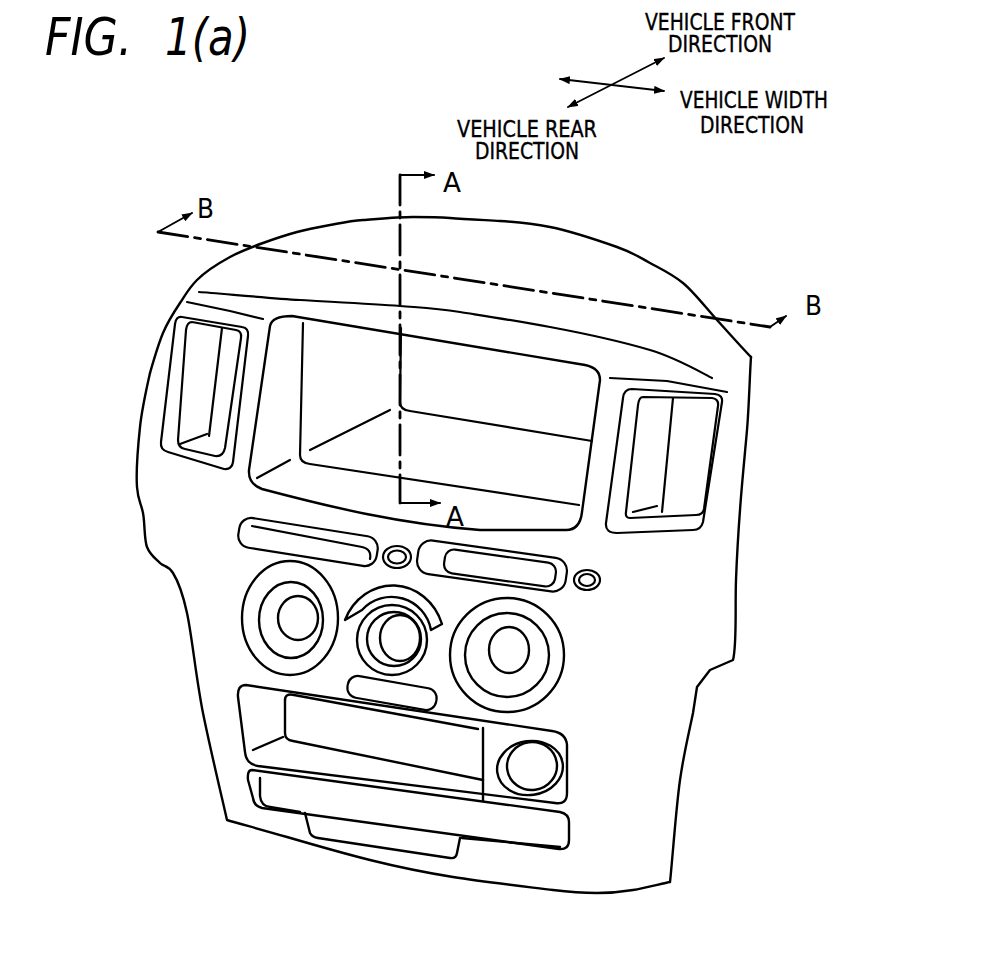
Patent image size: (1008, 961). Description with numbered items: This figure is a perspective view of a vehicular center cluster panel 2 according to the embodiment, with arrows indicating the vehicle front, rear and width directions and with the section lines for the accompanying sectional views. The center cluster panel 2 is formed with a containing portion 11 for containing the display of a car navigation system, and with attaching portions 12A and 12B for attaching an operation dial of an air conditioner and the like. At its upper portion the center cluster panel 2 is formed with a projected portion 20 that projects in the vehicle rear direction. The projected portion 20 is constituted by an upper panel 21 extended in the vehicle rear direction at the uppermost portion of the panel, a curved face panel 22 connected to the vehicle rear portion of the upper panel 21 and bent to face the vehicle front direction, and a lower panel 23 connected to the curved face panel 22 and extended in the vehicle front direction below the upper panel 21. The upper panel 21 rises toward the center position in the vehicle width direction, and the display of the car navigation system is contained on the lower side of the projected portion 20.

The center cluster panel 2 is at (281, 191).
The projected portion 20 is at (227, 284).
The upper panel 21 is at (586, 248).
The curved face panel 22 is at (452, 331).
The lower panel 23 is at (368, 331).
The containing portion 11 is at (494, 438).
The attaching portion 12A is at (268, 623).
The attaching portion 12B is at (533, 669).